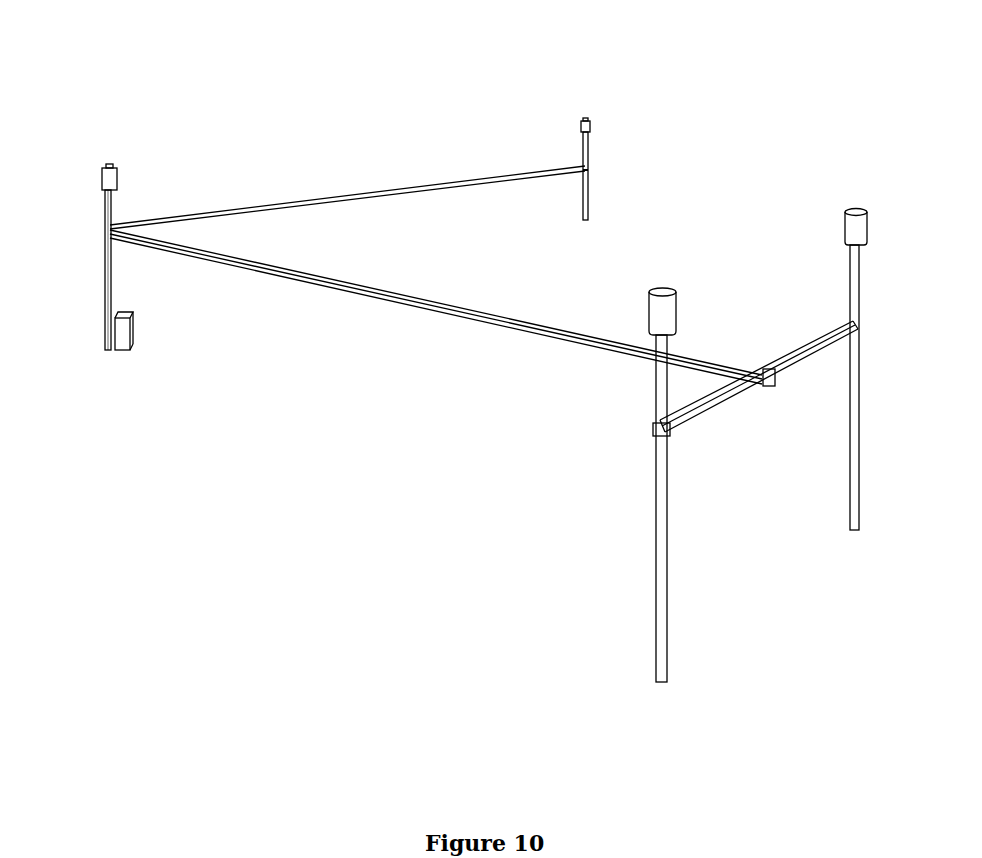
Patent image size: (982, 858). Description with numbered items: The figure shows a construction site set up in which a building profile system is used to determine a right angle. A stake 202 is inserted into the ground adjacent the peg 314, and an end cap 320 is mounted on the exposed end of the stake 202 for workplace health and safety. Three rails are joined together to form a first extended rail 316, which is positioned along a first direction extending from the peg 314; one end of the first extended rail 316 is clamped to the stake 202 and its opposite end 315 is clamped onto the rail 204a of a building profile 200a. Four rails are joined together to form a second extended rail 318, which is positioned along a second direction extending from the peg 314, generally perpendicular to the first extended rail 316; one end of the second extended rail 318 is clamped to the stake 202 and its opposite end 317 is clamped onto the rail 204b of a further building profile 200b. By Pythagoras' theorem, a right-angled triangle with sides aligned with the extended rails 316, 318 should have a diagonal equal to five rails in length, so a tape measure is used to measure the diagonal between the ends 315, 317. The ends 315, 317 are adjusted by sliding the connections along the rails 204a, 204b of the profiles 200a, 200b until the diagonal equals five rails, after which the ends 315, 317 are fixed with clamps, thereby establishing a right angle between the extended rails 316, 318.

The building profile 200a is at (618, 540).
The further building profile 200b is at (433, 110).
The stake 202 is at (104, 284).
The rail 204a is at (782, 375).
The rail 204b is at (585, 163).
The peg 314 is at (122, 326).
The opposite end of first extended rail 315 is at (758, 370).
The first extended rail 316 is at (399, 290).
The opposite end of second extended rail 317 is at (588, 166).
The second extended rail 318 is at (382, 188).
The end cap 320 is at (110, 166).